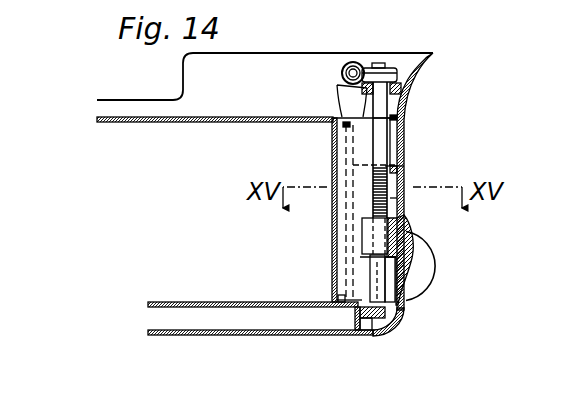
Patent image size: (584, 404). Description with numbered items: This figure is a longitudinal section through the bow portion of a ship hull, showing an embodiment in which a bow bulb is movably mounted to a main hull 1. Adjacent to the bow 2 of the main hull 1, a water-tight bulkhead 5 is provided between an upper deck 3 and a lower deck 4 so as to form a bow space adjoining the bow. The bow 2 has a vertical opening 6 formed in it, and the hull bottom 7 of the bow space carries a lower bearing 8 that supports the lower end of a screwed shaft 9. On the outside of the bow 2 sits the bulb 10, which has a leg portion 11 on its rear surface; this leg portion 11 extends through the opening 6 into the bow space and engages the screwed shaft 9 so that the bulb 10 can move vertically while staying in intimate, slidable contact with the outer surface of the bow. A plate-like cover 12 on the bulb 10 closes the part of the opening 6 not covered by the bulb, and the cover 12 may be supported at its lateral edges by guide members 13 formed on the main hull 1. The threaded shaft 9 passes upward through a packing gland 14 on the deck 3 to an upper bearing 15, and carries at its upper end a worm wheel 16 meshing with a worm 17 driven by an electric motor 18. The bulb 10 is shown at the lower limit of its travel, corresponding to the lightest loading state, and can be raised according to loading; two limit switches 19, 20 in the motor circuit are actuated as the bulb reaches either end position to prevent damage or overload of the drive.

The main hull 1 is at (266, 40).
The bow 2 is at (403, 141).
The deck 3 is at (297, 117).
The deck 4 is at (295, 308).
The water-tight bulkhead 5 is at (333, 226).
The vertical opening 6 is at (404, 169).
The hull bottom 7 is at (342, 337).
The lower bearing 8 is at (381, 334).
The screwed shaft 9 is at (378, 283).
The bulb 10 is at (410, 236).
The leg portion 11 is at (385, 238).
The plate-like cover 12 is at (392, 198).
The guide members 13 is at (346, 146).
The packing gland 14 is at (390, 115).
The upper bearing 15 is at (400, 88).
The worm wheel 16 is at (393, 68).
The worm 17 is at (356, 62).
The electric motor 18 is at (340, 63).
The limit switch 19 is at (338, 86).
The limit switch 20 is at (338, 296).